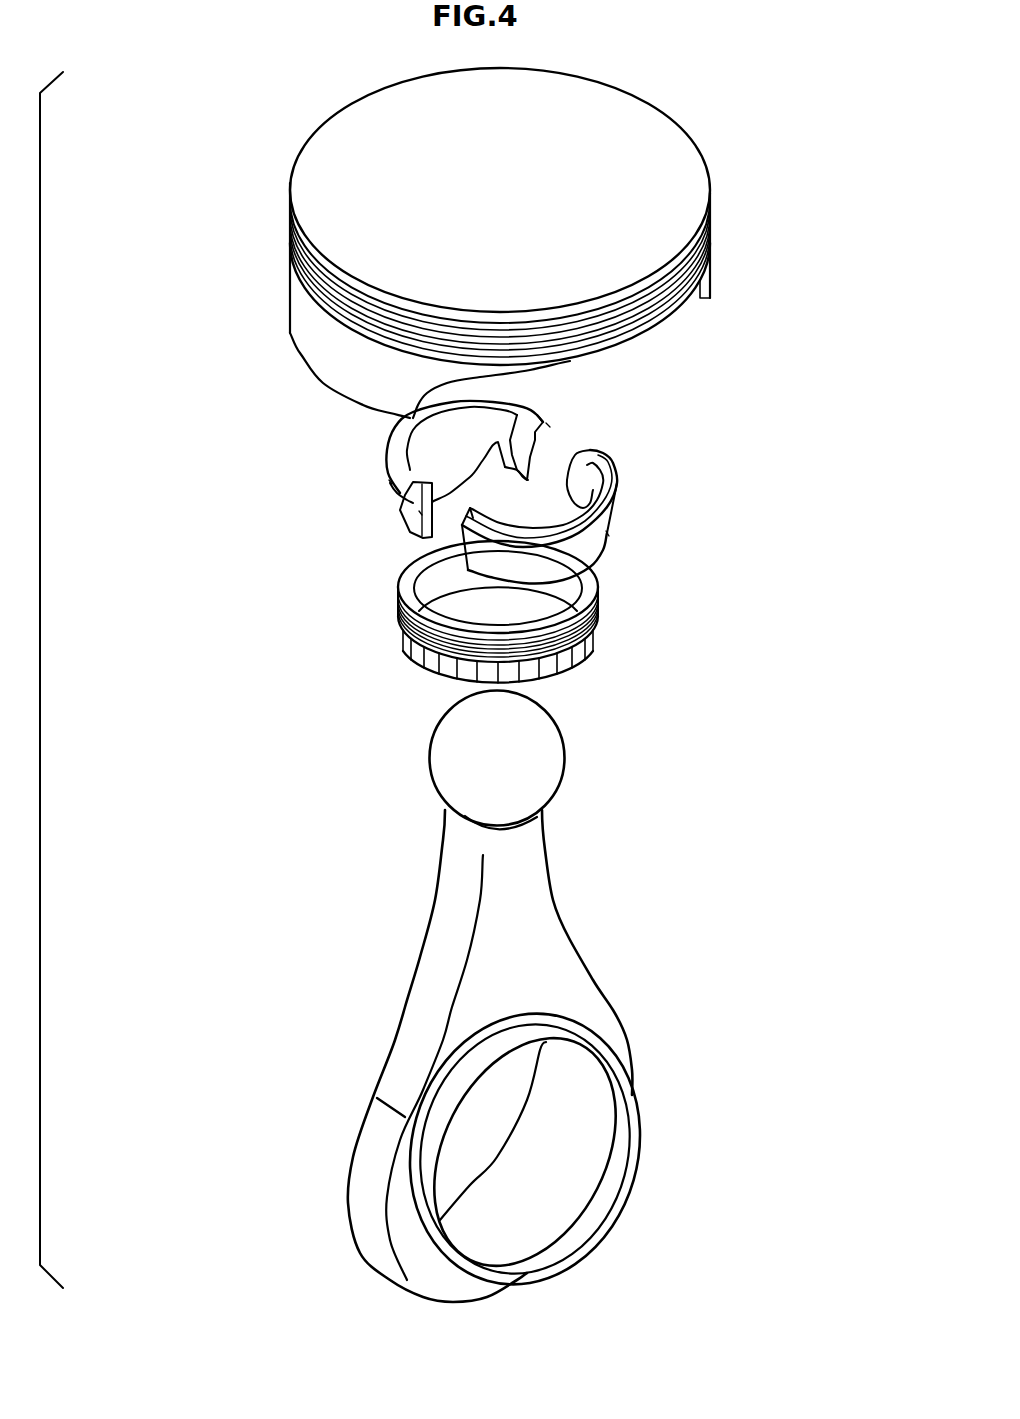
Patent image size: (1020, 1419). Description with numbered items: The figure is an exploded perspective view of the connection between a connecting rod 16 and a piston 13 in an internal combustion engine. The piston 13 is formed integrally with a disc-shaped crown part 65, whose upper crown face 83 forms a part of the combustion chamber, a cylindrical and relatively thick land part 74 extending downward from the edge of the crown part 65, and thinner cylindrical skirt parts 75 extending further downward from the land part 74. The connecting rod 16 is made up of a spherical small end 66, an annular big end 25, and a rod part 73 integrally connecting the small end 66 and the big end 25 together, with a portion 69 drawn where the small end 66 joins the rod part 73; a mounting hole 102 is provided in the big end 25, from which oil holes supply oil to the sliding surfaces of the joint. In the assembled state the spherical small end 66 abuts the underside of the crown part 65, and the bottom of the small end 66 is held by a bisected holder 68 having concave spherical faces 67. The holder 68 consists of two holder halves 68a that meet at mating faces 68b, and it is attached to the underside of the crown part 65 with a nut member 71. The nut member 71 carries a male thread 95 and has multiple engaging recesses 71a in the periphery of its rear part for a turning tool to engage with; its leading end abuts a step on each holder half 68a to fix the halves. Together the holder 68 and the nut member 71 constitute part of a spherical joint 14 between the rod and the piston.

The piston 13 is at (290, 210).
The crown part 65 is at (613, 187).
The crown face 83 is at (650, 218).
The land part 74 is at (290, 253).
The skirt parts 75 is at (322, 341).
The spherical joint 14 is at (648, 600).
The concave spherical faces 67 is at (436, 459).
The holder 68 is at (623, 493).
The holder halves 68a is at (390, 482).
The mating faces 68b is at (420, 513).
The nut member 71 is at (397, 610).
The male thread 95 is at (420, 665).
The engaging recesses 71a is at (553, 673).
The connecting rod 16 is at (405, 1008).
The small end 66 is at (521, 766).
The neck portion 69 is at (558, 797).
The rod part 73 is at (522, 929).
The big end 25 is at (369, 1159).
The mounting hole 102 is at (569, 1153).